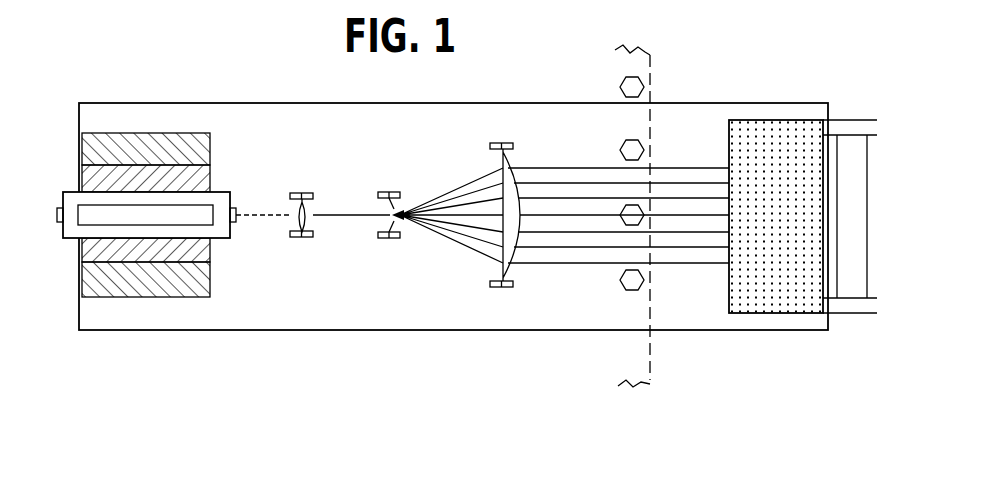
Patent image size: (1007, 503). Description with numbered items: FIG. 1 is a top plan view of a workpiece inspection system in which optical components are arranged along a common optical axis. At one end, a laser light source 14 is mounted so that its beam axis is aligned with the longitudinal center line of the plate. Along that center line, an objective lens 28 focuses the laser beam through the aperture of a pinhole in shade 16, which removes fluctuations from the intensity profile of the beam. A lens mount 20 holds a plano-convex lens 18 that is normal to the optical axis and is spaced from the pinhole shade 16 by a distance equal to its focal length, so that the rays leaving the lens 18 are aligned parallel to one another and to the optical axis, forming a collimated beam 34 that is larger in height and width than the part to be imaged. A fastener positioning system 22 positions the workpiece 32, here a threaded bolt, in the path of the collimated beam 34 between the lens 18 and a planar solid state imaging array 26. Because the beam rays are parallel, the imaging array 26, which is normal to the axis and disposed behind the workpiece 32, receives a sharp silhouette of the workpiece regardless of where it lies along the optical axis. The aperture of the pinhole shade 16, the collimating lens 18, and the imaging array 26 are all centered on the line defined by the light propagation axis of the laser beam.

The laser light source 14 is at (141, 247).
The pinhole shade 16 is at (387, 241).
The plano-convex lens 18 is at (498, 255).
The lens mount 20 is at (508, 293).
The fastener positioning system 22 is at (645, 393).
The planar solid state imaging array 26 is at (740, 320).
The objective lens 28 is at (297, 240).
The workpiece 32 is at (628, 294).
The collimated beam 34 is at (573, 247).